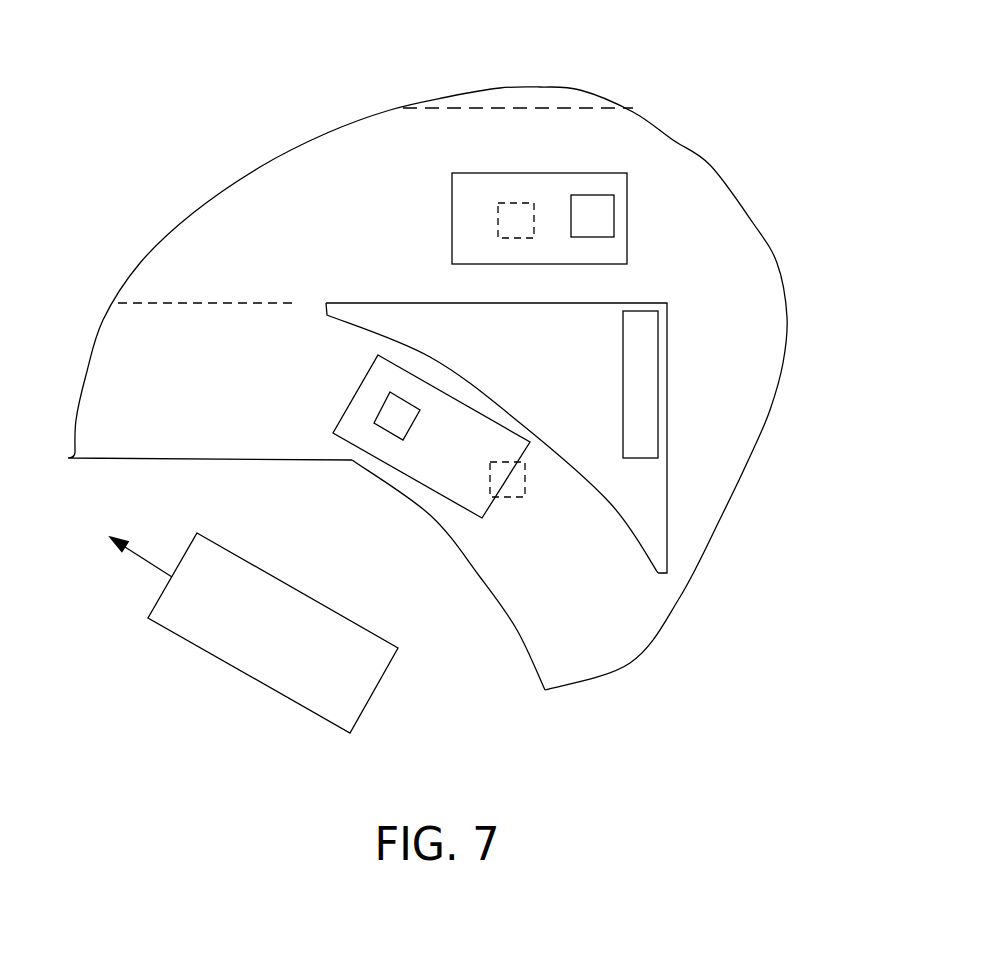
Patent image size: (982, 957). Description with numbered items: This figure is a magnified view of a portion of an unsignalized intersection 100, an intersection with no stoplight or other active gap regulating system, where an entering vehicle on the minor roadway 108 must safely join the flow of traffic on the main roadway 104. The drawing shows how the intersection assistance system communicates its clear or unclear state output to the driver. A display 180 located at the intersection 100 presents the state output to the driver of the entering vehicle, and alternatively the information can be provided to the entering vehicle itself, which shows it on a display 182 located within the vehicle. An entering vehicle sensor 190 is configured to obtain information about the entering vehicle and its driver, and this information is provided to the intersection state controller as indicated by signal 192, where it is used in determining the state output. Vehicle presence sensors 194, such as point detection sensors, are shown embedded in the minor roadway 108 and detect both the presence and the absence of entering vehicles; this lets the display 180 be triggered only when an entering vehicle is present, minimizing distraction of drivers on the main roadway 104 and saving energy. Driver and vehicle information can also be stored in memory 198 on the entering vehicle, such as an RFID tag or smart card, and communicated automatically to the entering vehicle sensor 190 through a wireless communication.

The unsignalized intersection 100 is at (380, 48).
The main roadway 104 is at (767, 342).
The minor roadway 108 is at (143, 283).
The display 180 is at (663, 448).
The display 182 is at (608, 218).
The entering vehicle sensor 190 is at (242, 665).
The signal 192 is at (142, 562).
The vehicle presence sensor 194 is at (503, 217).
The memory 198 is at (388, 412).